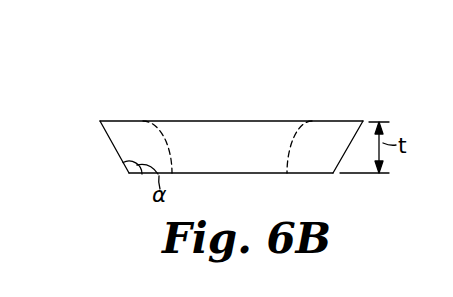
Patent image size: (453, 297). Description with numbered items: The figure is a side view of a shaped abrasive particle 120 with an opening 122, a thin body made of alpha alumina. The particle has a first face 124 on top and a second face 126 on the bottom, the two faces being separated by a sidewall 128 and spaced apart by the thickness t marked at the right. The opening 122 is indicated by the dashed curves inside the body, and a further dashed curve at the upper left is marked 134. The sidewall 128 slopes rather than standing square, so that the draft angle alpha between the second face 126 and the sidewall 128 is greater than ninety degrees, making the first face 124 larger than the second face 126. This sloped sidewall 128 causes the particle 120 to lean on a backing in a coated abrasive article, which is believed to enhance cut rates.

The shaped abrasive particle 120 is at (178, 73).
The opening 122 is at (228, 130).
The first face 124 is at (337, 121).
The second face 126 is at (313, 175).
The sidewall 128 is at (121, 143).
The curved edge region 134 is at (170, 130).